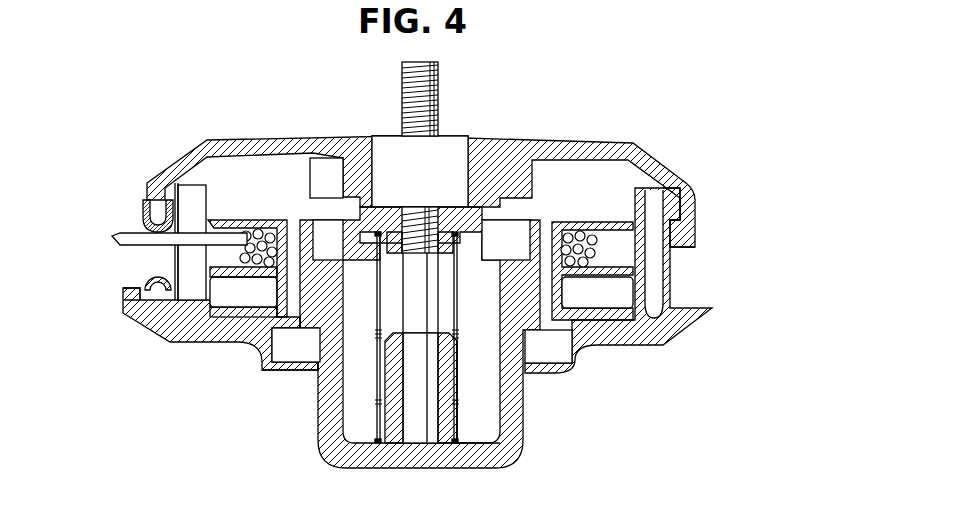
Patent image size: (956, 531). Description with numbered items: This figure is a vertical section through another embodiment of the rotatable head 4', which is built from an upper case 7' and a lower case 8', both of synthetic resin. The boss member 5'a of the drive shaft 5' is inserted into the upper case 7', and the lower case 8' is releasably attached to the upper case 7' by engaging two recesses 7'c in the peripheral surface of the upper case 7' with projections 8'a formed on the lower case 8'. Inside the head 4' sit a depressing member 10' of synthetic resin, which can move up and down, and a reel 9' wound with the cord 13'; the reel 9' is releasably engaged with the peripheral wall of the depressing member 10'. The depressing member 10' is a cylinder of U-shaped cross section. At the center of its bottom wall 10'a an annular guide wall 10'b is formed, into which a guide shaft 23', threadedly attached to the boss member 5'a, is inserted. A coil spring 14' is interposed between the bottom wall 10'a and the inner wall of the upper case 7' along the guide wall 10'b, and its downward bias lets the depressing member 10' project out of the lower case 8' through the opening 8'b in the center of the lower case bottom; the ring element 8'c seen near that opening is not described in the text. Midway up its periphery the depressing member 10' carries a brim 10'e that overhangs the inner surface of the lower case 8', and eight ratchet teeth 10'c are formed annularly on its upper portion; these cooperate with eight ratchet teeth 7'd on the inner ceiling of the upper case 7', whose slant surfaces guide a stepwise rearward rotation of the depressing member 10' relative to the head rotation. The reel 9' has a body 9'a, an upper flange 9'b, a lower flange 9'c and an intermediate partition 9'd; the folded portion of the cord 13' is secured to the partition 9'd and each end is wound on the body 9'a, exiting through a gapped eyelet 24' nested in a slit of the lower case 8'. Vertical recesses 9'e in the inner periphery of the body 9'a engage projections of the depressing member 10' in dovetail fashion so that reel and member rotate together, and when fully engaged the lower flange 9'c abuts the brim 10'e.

The head 4' is at (382, 103).
The drive shaft 5' is at (449, 250).
The boss member 5'a is at (441, 154).
The upper case 7' is at (421, 172).
The recess 7'c is at (708, 222).
The ratchet tooth 7'd is at (332, 149).
The lower case 8' is at (618, 289).
The projection 8'a is at (697, 185).
The opening 8'b is at (290, 407).
The ring 8'c is at (278, 385).
The reel 9' is at (197, 205).
The body 9'a is at (220, 344).
The upper flange 9'b is at (247, 208).
The lower flange 9'c is at (187, 328).
The intermediate partition 9'd is at (123, 309).
The vertical recess 9'e is at (589, 311).
The depressing member 10' is at (437, 344).
The bottom wall 10'a is at (478, 430).
The annular guide wall 10'b is at (421, 426).
The ratchet tooth 10'c is at (307, 166).
The brim 10'e is at (246, 366).
The cord 13' is at (157, 257).
The coil spring 14' is at (396, 473).
The guide shaft 23' is at (475, 336).
The eyelet 24' is at (126, 200).